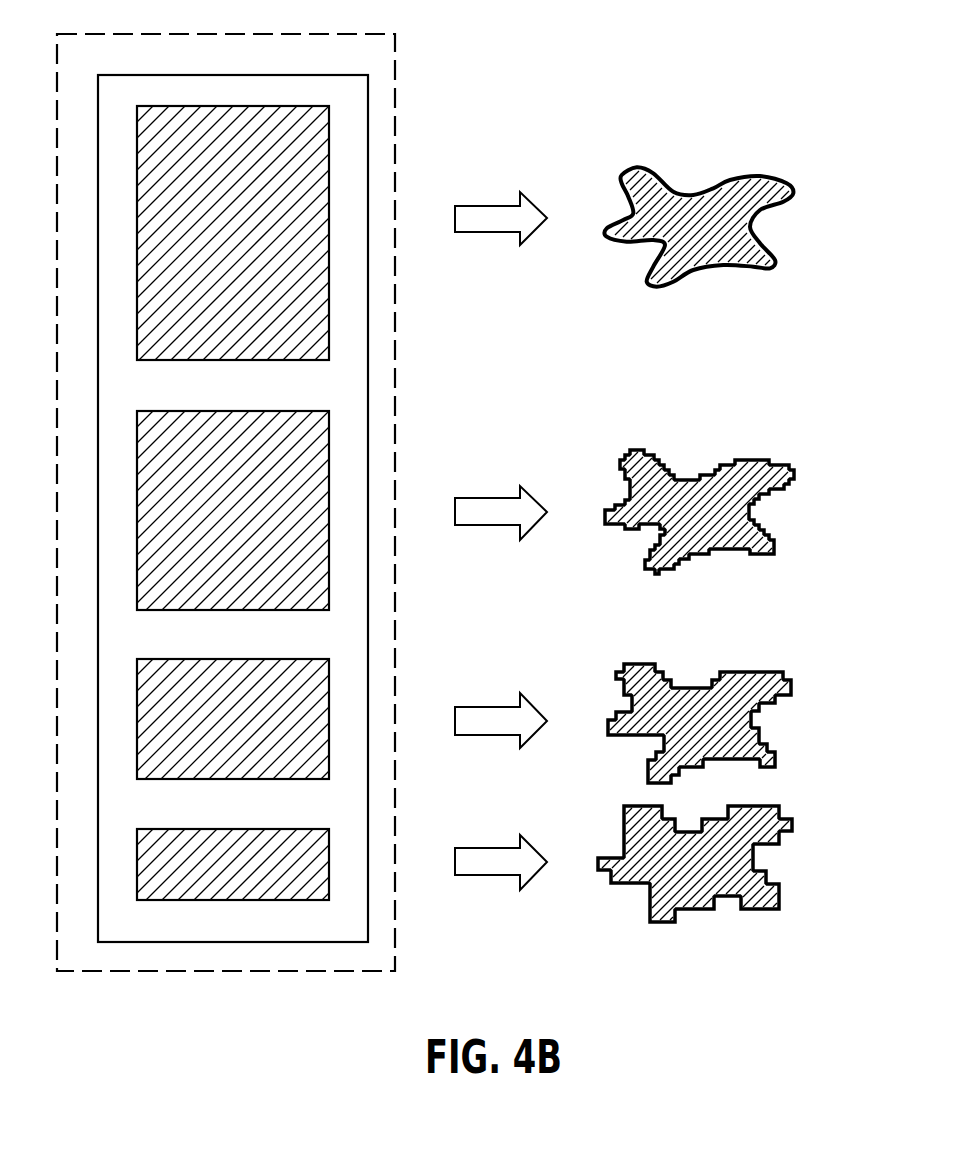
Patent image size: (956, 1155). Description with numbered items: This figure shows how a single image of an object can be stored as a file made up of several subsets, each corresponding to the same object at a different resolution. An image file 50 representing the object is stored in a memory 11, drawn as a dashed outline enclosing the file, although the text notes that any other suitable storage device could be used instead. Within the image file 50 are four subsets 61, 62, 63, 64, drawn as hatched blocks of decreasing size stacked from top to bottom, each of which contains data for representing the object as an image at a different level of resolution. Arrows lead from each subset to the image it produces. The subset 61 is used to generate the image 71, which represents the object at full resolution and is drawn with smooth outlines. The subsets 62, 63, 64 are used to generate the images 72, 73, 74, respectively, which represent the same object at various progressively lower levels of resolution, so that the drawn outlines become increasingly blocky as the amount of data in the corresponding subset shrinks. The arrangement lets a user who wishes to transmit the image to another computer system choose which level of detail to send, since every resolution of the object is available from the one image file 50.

The memory 11 is at (395, 283).
The image file 50 is at (149, 75).
The subset 61 is at (137, 173).
The subset 62 is at (137, 468).
The subset 63 is at (137, 719).
The subset 64 is at (137, 870).
The image 71 is at (788, 180).
The image 72 is at (787, 463).
The image 73 is at (787, 673).
The image 74 is at (790, 813).